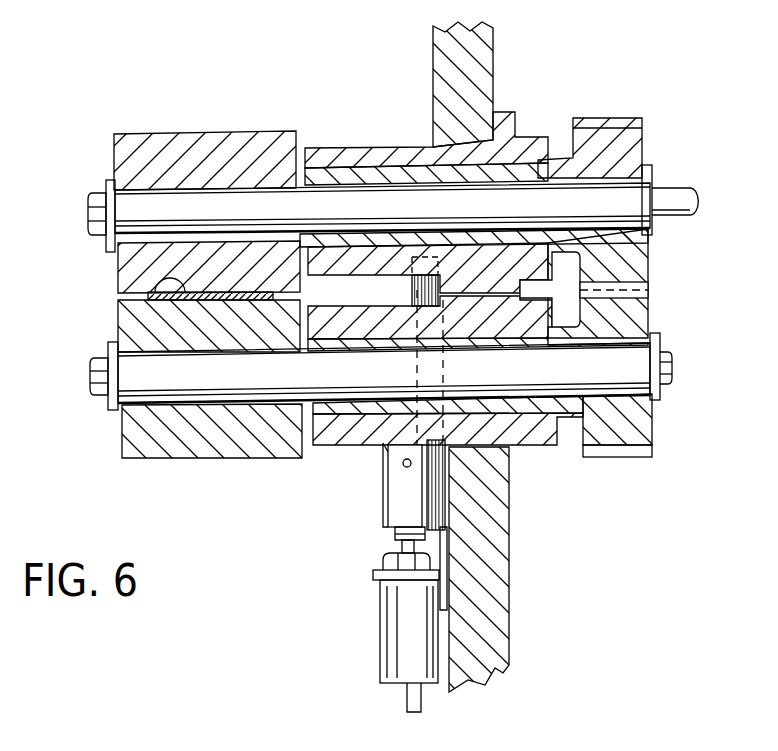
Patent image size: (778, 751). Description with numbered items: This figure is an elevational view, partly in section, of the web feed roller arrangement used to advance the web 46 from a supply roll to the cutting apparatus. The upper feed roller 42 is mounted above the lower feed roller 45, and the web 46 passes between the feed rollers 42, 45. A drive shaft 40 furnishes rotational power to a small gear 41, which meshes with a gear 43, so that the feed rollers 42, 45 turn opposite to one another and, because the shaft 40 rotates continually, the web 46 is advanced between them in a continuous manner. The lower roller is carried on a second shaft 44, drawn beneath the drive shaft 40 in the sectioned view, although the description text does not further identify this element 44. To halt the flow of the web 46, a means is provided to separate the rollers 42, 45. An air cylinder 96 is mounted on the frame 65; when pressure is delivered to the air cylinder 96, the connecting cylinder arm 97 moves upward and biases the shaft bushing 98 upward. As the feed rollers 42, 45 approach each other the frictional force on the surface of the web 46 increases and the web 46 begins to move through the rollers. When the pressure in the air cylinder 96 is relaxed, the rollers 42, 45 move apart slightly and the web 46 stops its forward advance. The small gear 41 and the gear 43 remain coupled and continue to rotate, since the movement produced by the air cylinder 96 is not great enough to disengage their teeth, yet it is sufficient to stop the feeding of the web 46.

The drive shaft 40 is at (678, 186).
The small gear 41 is at (632, 118).
The feed roller 42 is at (178, 132).
The gear 43 is at (628, 455).
The lower shaft 44 is at (636, 357).
The feed roller 45 is at (122, 441).
The web 46 is at (120, 296).
The frame 65 is at (510, 605).
The air cylinder 96 is at (380, 640).
The cylinder arm 97 is at (388, 482).
The shaft bushing 98 is at (362, 441).